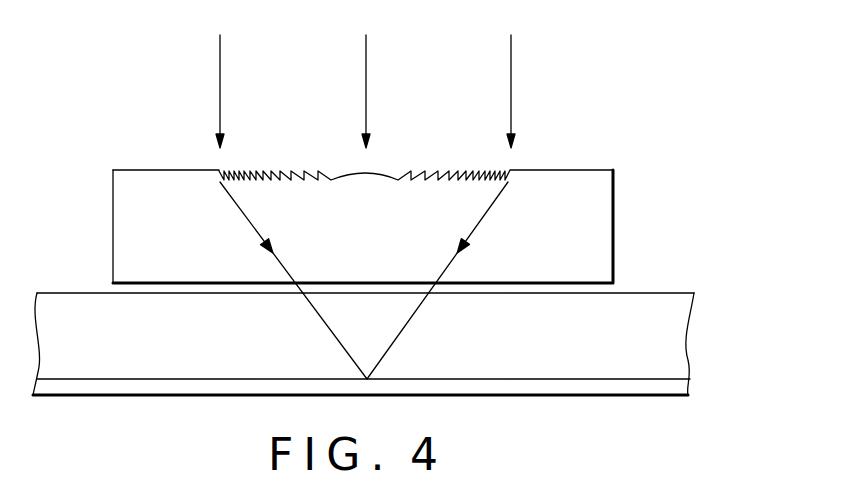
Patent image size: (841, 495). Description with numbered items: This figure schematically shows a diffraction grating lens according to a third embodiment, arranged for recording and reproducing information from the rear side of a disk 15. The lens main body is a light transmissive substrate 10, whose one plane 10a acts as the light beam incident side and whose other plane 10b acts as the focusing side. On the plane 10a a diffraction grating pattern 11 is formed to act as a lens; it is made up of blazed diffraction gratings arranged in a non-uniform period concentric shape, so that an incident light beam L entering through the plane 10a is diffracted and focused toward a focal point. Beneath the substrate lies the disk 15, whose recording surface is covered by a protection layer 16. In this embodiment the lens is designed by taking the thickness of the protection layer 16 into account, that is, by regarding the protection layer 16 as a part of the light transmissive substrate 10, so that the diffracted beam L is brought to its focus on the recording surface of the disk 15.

The incident light beam L is at (512, 60).
The light transmissive substrate 10 is at (401, 188).
The plane 10a is at (585, 160).
The other plane 10b is at (597, 281).
The diffraction grating pattern 11 is at (459, 164).
The protection layer 16 is at (682, 330).
The disk 15 is at (681, 388).